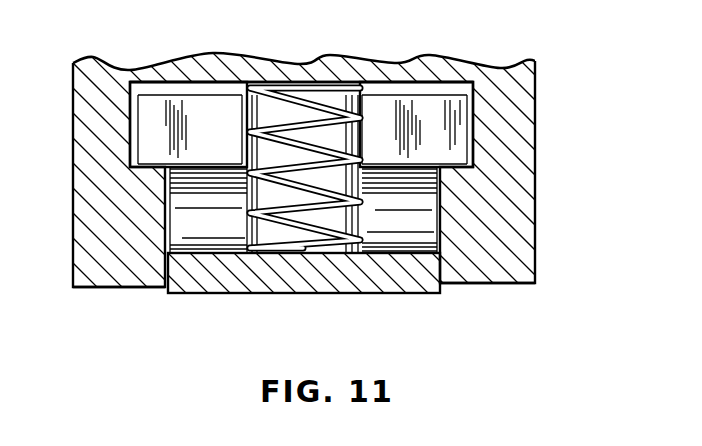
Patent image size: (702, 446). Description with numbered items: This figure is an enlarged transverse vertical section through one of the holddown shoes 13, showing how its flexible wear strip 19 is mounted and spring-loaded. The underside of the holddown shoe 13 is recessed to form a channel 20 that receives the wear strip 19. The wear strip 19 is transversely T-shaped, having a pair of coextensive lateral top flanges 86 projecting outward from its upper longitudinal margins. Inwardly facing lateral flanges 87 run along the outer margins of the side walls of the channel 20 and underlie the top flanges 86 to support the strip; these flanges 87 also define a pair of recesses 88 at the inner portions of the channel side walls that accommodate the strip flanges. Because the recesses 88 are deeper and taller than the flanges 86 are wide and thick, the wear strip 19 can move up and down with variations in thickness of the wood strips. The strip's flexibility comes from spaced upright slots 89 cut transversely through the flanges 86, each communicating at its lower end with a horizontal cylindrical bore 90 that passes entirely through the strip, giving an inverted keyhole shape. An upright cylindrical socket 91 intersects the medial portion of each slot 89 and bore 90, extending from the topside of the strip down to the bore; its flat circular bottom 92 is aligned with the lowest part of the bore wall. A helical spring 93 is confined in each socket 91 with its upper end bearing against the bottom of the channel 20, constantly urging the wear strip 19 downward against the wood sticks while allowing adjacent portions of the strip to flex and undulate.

The holddown shoe 13 is at (537, 98).
The wear strip 19 is at (383, 292).
The channel 20 is at (211, 82).
The lateral top flanges 86 is at (132, 82).
The lateral flanges 87 is at (138, 267).
The recesses 88 is at (130, 134).
The upright slots 89 is at (420, 103).
The cylindrical bore 90 is at (222, 250).
The upright socket 91 is at (245, 122).
The flat circular bottom of socket 92 is at (338, 252).
The helical spring 93 is at (340, 122).